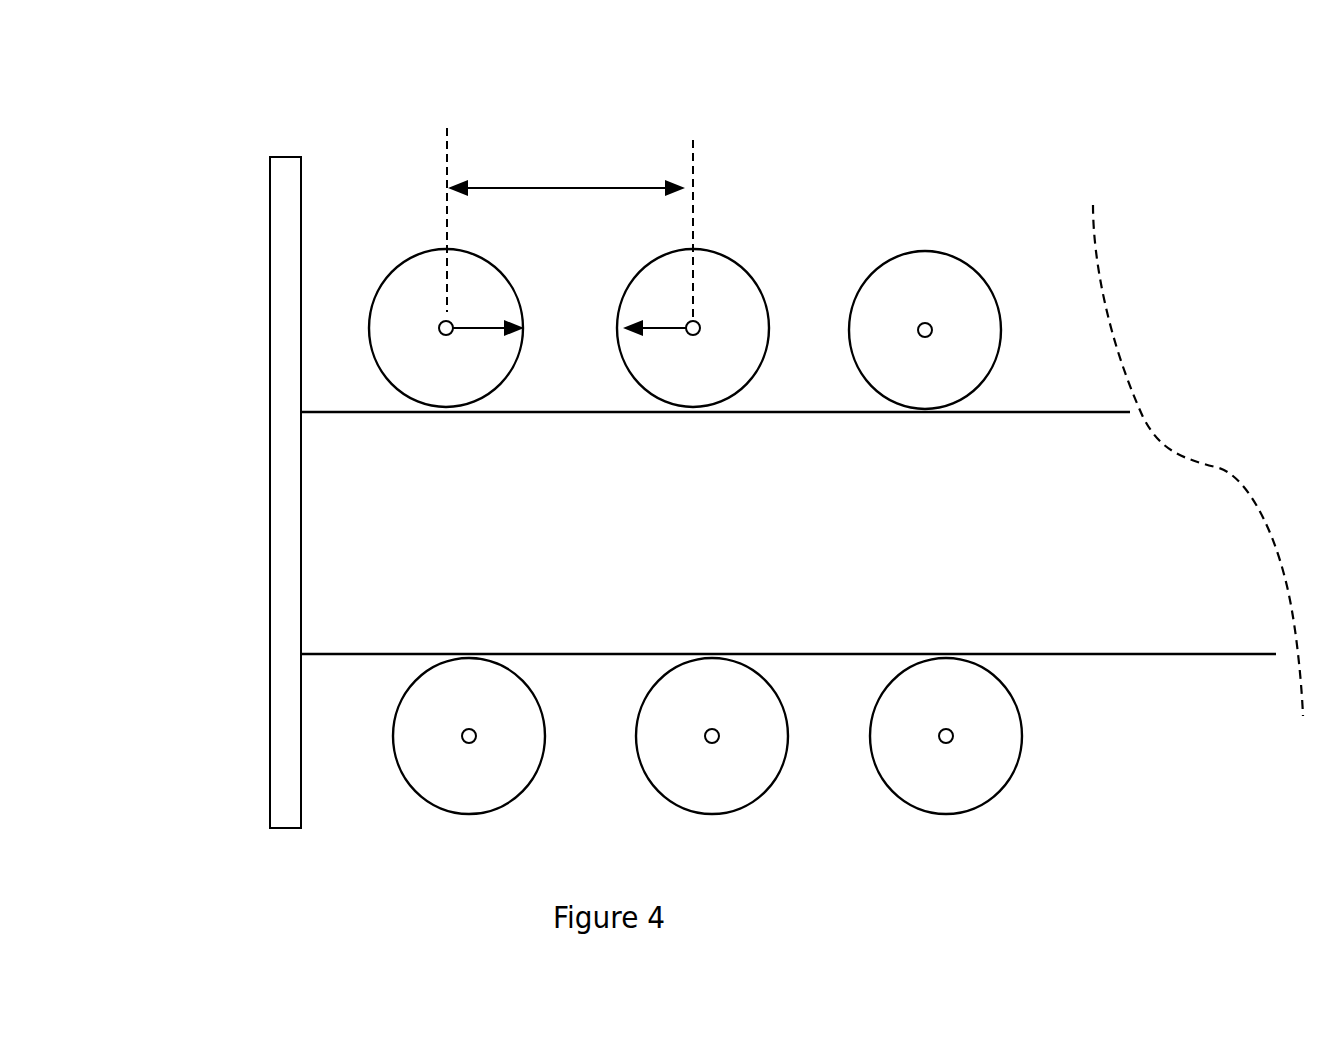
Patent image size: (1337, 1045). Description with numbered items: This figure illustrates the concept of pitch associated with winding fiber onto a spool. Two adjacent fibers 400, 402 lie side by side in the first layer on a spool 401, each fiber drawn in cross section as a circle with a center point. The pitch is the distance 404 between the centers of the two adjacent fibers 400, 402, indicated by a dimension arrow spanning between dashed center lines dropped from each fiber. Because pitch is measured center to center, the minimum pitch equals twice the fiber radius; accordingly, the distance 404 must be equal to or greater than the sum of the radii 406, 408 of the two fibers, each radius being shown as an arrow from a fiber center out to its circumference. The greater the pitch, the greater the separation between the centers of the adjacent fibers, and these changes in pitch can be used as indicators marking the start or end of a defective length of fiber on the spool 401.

The fiber 400 is at (417, 253).
The spool 401 is at (270, 420).
The fiber 402 is at (723, 255).
The distance 404 is at (612, 187).
The radius 406 is at (493, 327).
The radius 408 is at (652, 328).